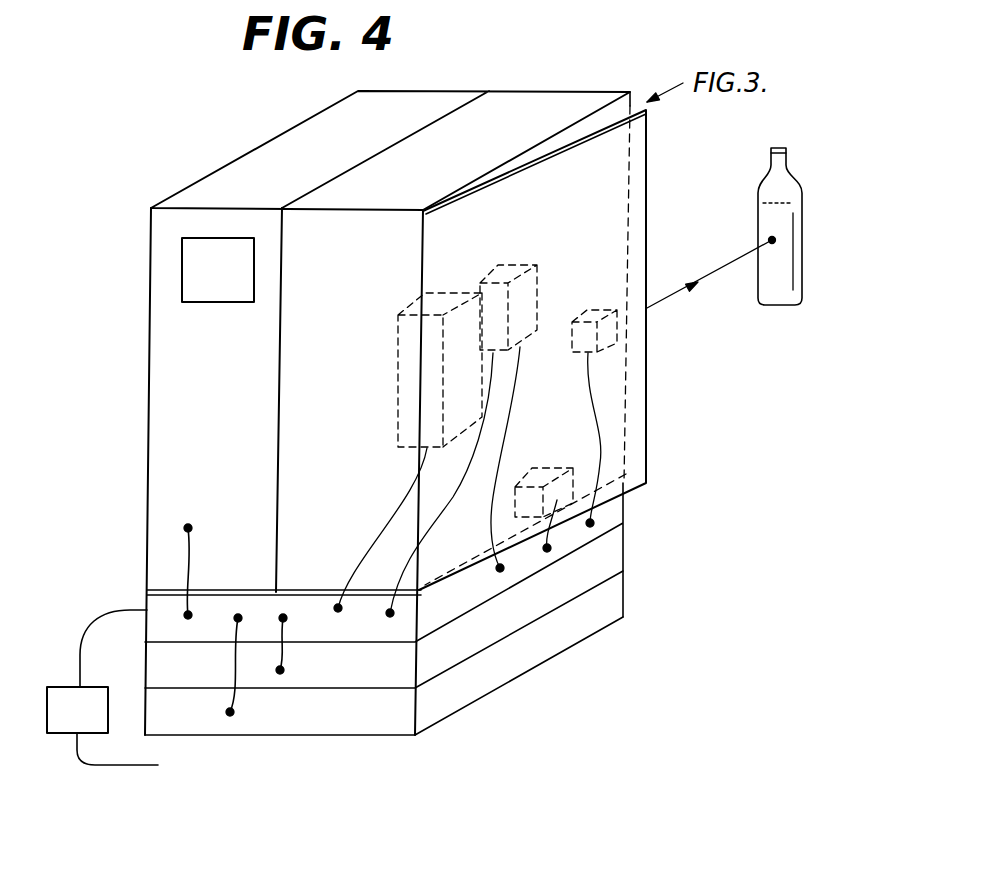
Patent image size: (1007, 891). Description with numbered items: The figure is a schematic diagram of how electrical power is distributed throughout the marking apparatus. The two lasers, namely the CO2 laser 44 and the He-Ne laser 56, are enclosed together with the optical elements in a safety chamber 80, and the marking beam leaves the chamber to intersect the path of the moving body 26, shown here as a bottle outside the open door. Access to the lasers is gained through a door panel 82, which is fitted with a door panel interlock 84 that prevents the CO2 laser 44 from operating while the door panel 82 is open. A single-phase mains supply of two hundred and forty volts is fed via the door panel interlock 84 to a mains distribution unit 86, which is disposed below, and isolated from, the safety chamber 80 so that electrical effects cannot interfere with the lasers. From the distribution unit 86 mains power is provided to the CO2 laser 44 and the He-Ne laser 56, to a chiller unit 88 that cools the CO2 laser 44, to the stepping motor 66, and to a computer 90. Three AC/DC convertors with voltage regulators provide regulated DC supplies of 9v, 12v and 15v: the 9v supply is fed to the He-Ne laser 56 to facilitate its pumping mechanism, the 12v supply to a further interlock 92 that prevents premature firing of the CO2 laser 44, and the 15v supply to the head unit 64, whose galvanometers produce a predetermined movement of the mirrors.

The safety chamber 80 is at (525, 105).
The door panel 82 is at (638, 385).
The moving body 26 is at (755, 210).
The He-Ne laser 56 is at (515, 265).
The head unit 64 is at (597, 318).
The CO2 laser 44 is at (398, 342).
The computer 90 is at (207, 455).
The further interlock 92 is at (543, 465).
The door panel interlock 84 is at (65, 693).
The mains distribution unit 86 is at (368, 628).
The stepping motor 66 is at (343, 675).
The chiller unit 88 is at (320, 720).
The 9 V regulated DC supply 9v is at (500, 568).
The 12 V regulated DC supply 12v is at (547, 548).
The 15 V regulated DC supply 15v is at (590, 523).